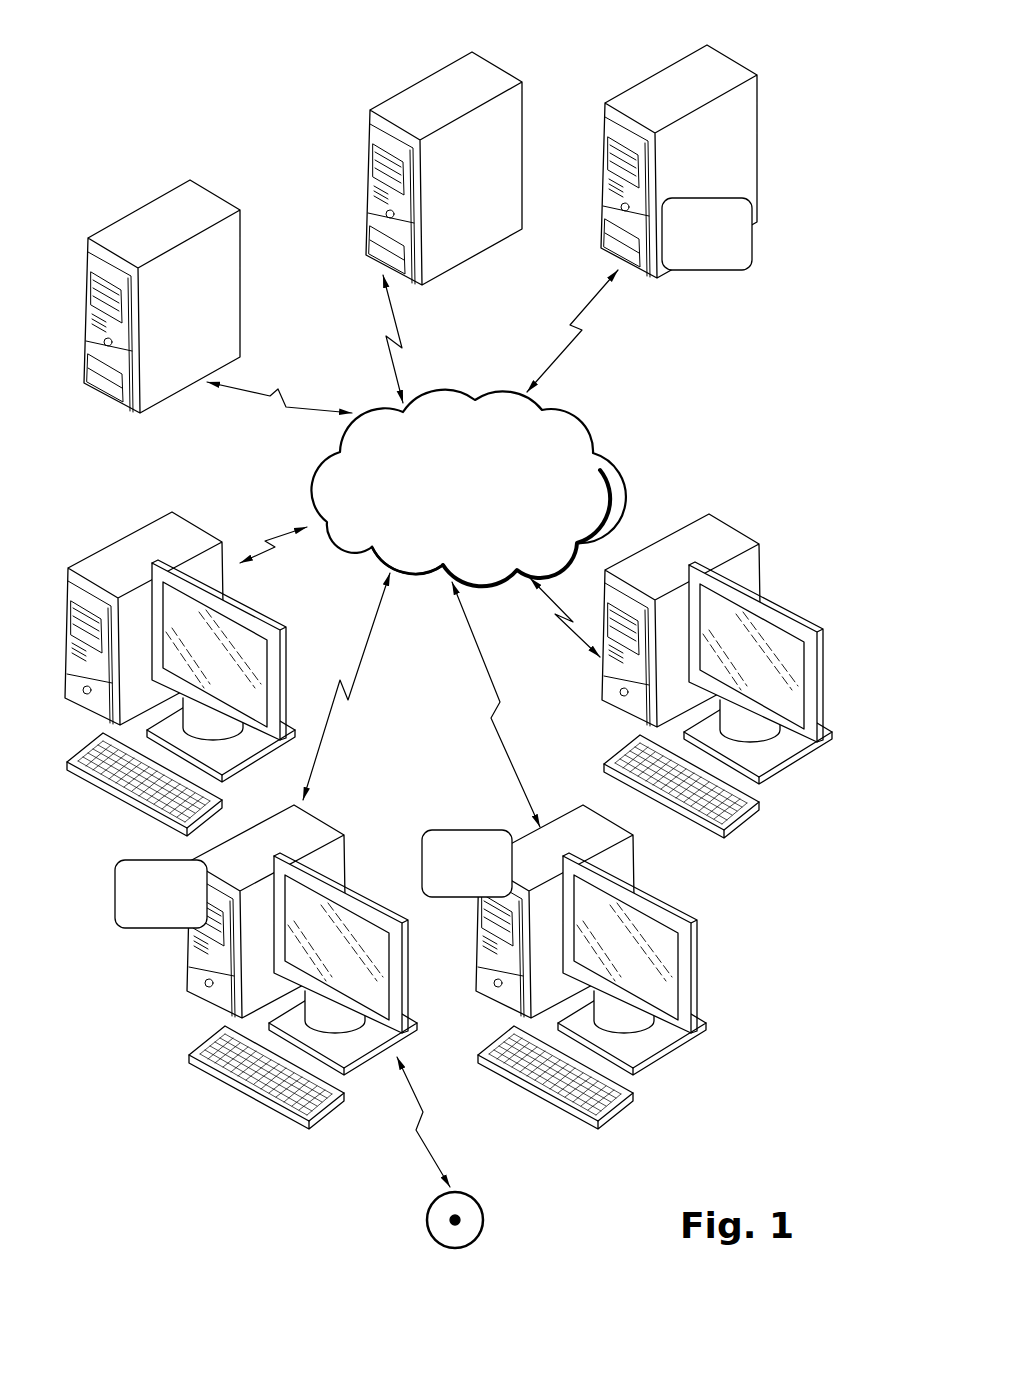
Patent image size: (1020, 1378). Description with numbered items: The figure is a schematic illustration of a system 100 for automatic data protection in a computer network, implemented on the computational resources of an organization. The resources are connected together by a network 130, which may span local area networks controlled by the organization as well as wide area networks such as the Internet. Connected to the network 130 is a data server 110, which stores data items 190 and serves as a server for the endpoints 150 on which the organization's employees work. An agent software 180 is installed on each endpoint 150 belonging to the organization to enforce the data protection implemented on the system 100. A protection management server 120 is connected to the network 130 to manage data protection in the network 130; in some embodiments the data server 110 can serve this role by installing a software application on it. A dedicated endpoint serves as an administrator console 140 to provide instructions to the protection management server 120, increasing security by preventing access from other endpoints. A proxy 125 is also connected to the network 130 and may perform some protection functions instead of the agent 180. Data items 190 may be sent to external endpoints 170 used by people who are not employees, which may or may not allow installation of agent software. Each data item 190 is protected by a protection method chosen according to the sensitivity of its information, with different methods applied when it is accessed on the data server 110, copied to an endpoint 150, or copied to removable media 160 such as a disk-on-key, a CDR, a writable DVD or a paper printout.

The system 100 is at (155, 100).
The data server 110 is at (759, 150).
The protection management server 120 is at (366, 190).
The proxy 125 is at (241, 302).
The network 130 is at (438, 388).
The administrator console 140 is at (121, 541).
The endpoint 150 is at (191, 963).
The removable media 160 is at (470, 1192).
The external endpoint 170 is at (603, 692).
The agent software 180 is at (115, 901).
The data item 190 is at (753, 241).